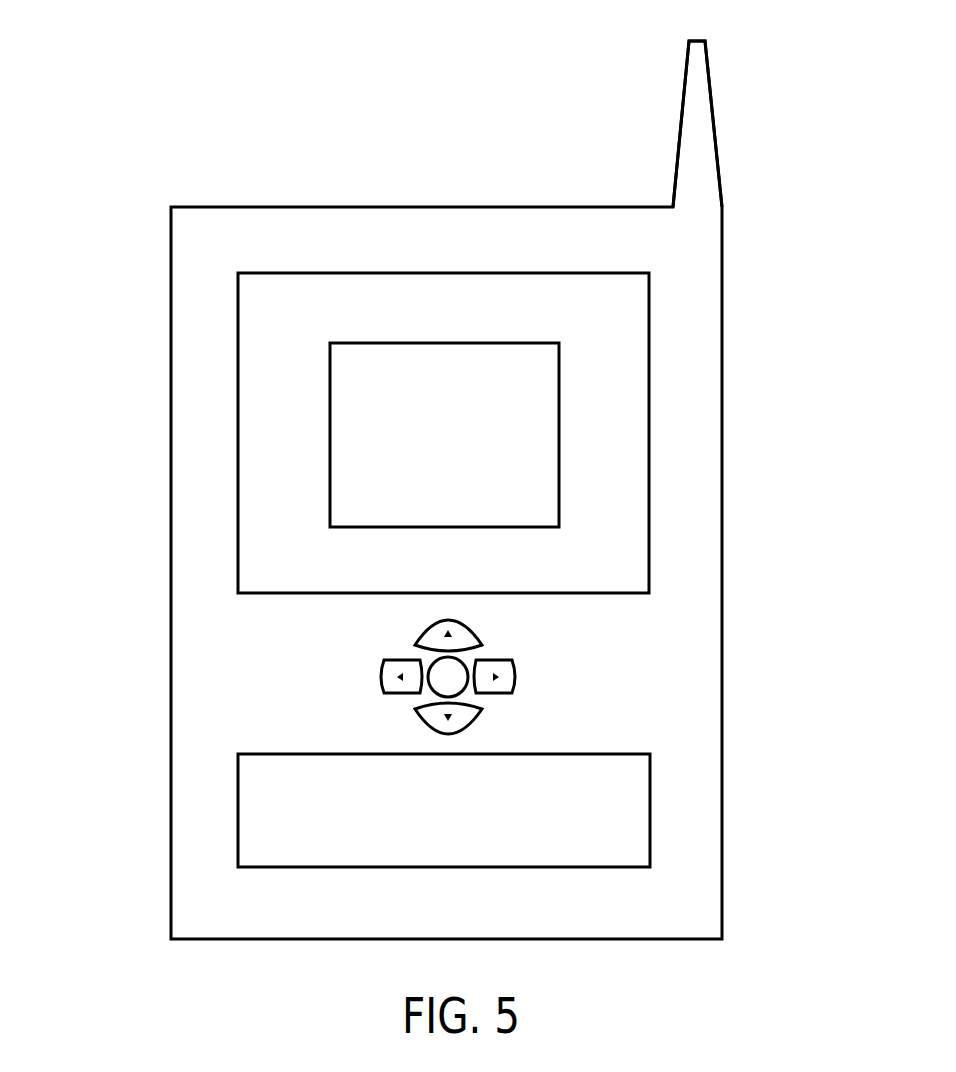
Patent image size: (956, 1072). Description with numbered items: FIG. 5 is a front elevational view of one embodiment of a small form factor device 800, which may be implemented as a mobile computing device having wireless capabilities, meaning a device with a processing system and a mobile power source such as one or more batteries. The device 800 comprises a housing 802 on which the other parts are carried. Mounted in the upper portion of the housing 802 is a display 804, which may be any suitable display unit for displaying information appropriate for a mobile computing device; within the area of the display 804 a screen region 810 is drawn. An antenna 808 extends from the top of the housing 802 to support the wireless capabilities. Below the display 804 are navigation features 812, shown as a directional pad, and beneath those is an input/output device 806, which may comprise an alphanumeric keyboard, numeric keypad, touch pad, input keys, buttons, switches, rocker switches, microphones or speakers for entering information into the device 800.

The small form factor device 800 is at (168, 142).
The housing 802 is at (171, 665).
The display 804 is at (649, 333).
The input/output (I/O) device 806 is at (650, 810).
The antenna 808 is at (681, 124).
The display screen 810 is at (445, 343).
The navigation features 812 is at (556, 678).